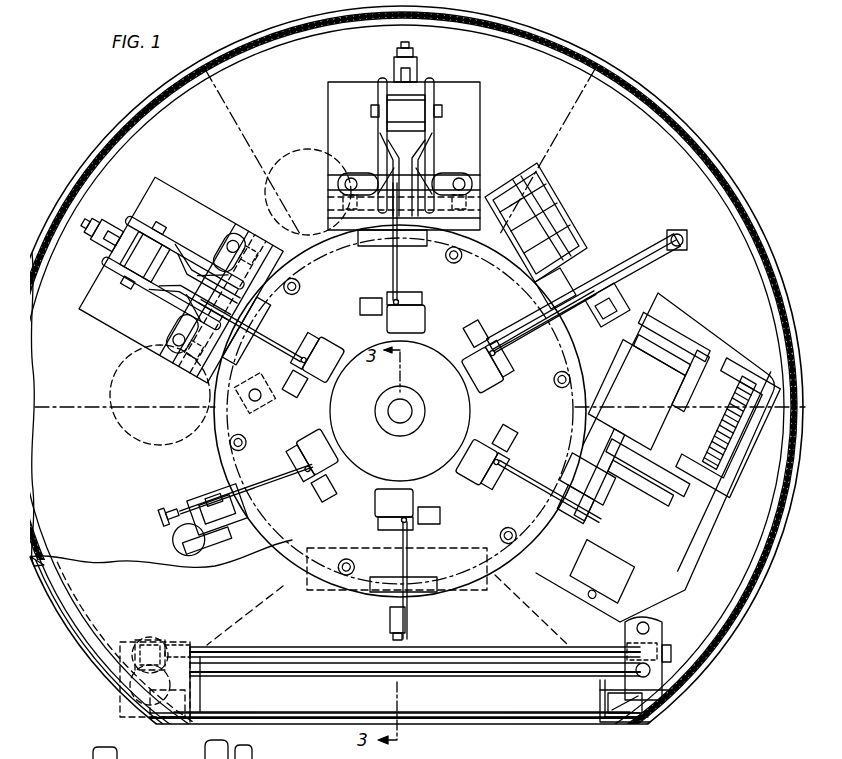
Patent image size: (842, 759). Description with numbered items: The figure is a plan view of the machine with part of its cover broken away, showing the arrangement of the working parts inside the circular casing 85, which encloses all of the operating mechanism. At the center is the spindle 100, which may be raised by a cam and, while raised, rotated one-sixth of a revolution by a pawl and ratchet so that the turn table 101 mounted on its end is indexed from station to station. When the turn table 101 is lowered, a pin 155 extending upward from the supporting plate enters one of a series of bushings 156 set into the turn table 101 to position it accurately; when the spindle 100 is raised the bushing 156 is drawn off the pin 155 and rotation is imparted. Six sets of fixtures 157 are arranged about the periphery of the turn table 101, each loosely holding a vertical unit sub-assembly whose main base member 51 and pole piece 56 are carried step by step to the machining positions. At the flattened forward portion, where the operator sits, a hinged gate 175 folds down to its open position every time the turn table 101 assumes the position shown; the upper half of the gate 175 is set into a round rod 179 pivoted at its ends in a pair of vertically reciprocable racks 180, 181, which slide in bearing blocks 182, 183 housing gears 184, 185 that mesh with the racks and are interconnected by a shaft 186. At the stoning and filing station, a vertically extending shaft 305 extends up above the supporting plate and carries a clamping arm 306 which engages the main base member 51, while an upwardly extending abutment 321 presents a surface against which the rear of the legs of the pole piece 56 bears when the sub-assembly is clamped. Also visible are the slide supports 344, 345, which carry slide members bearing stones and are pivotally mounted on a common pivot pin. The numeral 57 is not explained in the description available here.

The circular casing 85 is at (676, 133).
The spindle 100 is at (393, 420).
The turn table 101 is at (452, 578).
The main base member 51 is at (274, 492).
The pin 155 is at (234, 412).
The bushings 156 is at (300, 290).
The sets of fixtures 157 is at (452, 323).
The hinged gate 175 is at (290, 714).
The round rod 179 is at (316, 664).
The shaft 186 is at (420, 656).
The rack 180 is at (662, 680).
The rack 181 is at (106, 692).
The bearing block 182 is at (650, 634).
The bearing block 183 is at (130, 634).
The gear 184 is at (652, 652).
The gear 185 is at (176, 634).
The vertically extending shaft 305 is at (690, 250).
The clamping arm 306 is at (668, 240).
The abutment 321 is at (602, 312).
The slide support 344 is at (546, 208).
The slide support 345 is at (560, 226).
The pole piece 56 is at (120, 747).
The fragment 57 is at (205, 749).